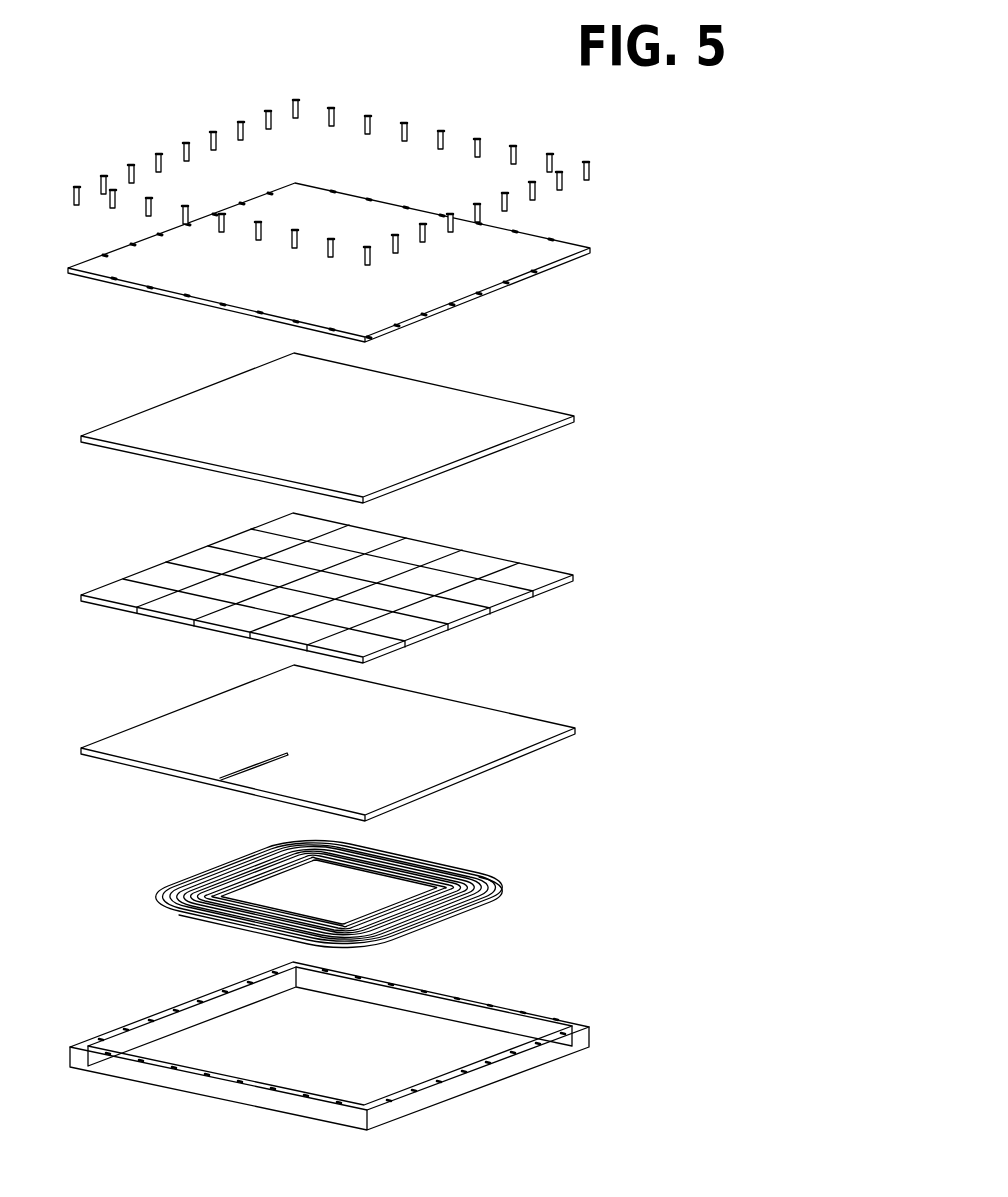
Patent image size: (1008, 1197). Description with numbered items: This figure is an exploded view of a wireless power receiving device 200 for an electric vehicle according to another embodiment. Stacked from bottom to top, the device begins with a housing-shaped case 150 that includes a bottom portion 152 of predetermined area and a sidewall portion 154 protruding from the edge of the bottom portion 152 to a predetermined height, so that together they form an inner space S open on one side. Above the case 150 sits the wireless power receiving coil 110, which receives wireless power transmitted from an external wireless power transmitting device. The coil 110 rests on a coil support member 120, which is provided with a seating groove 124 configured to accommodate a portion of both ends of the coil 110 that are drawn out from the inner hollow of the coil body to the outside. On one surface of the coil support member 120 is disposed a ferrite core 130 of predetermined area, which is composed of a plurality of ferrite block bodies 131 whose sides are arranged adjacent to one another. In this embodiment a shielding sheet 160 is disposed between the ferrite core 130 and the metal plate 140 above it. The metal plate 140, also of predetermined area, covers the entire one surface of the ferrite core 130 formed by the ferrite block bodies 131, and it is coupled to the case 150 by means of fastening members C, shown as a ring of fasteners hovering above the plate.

The wireless power receiving device 200 is at (343, 57).
The wireless power receiving coil 110 is at (505, 885).
The coil support member 120 is at (359, 724).
The seating groove 124 is at (248, 760).
The ferrite core 130 is at (370, 569).
The ferrite block body 131 is at (503, 607).
The metal plate 140 is at (557, 245).
The fastening member C is at (590, 170).
The shielding sheet 160 is at (523, 413).
The case 150 is at (412, 1031).
The bottom portion 152 is at (495, 1032).
The sidewall portion 154 is at (547, 1052).
The inner space S is at (420, 1038).